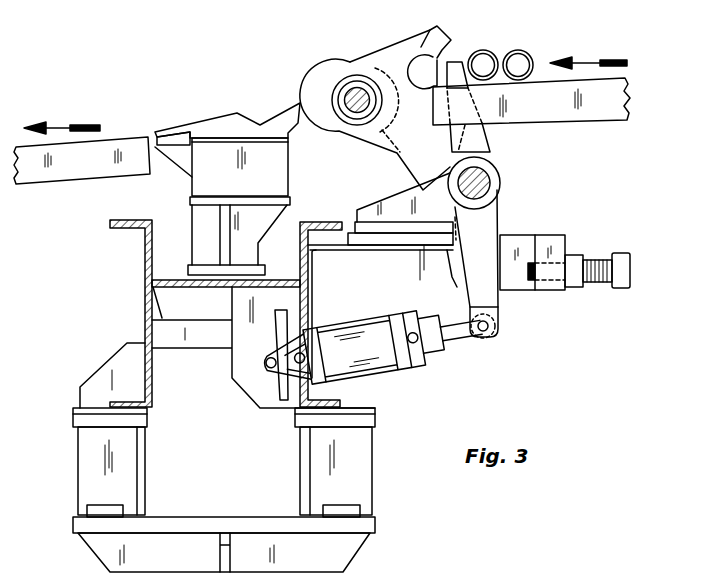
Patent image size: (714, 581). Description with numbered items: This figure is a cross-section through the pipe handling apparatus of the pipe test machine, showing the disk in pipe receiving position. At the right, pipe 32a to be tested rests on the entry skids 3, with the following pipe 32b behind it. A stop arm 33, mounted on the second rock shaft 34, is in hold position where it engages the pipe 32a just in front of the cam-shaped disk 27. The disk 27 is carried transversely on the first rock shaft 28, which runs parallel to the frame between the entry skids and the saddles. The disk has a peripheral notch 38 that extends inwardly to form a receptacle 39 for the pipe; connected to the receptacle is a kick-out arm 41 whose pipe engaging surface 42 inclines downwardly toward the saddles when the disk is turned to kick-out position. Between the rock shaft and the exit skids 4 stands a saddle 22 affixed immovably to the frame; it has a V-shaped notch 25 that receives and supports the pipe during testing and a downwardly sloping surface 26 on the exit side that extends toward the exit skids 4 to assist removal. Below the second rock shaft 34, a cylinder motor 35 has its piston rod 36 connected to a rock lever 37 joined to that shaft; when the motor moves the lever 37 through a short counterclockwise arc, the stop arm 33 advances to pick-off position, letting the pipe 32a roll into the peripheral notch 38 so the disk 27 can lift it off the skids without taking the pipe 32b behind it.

The entry skids 3 is at (630, 102).
The exit skids 4 is at (118, 140).
The saddles 22 is at (292, 137).
The V-shaped notch 25 is at (262, 122).
The downwardly sloping surface 26 is at (199, 128).
The disks 27 is at (382, 57).
The first rock shaft 28 is at (347, 93).
The pipe to be tested 32a is at (491, 54).
The pipe behind 32b is at (531, 64).
The stop arms 33 is at (484, 140).
The second rock shaft 34 is at (490, 184).
The cylinder motor 35 is at (395, 378).
The piston rod 36 is at (458, 341).
The rock lever 37 is at (490, 222).
The peripheral notch 38 is at (463, 60).
The receptacle 39 is at (415, 94).
The kick-out arm 41 is at (428, 31).
The pipe engaging surface 42 is at (441, 45).